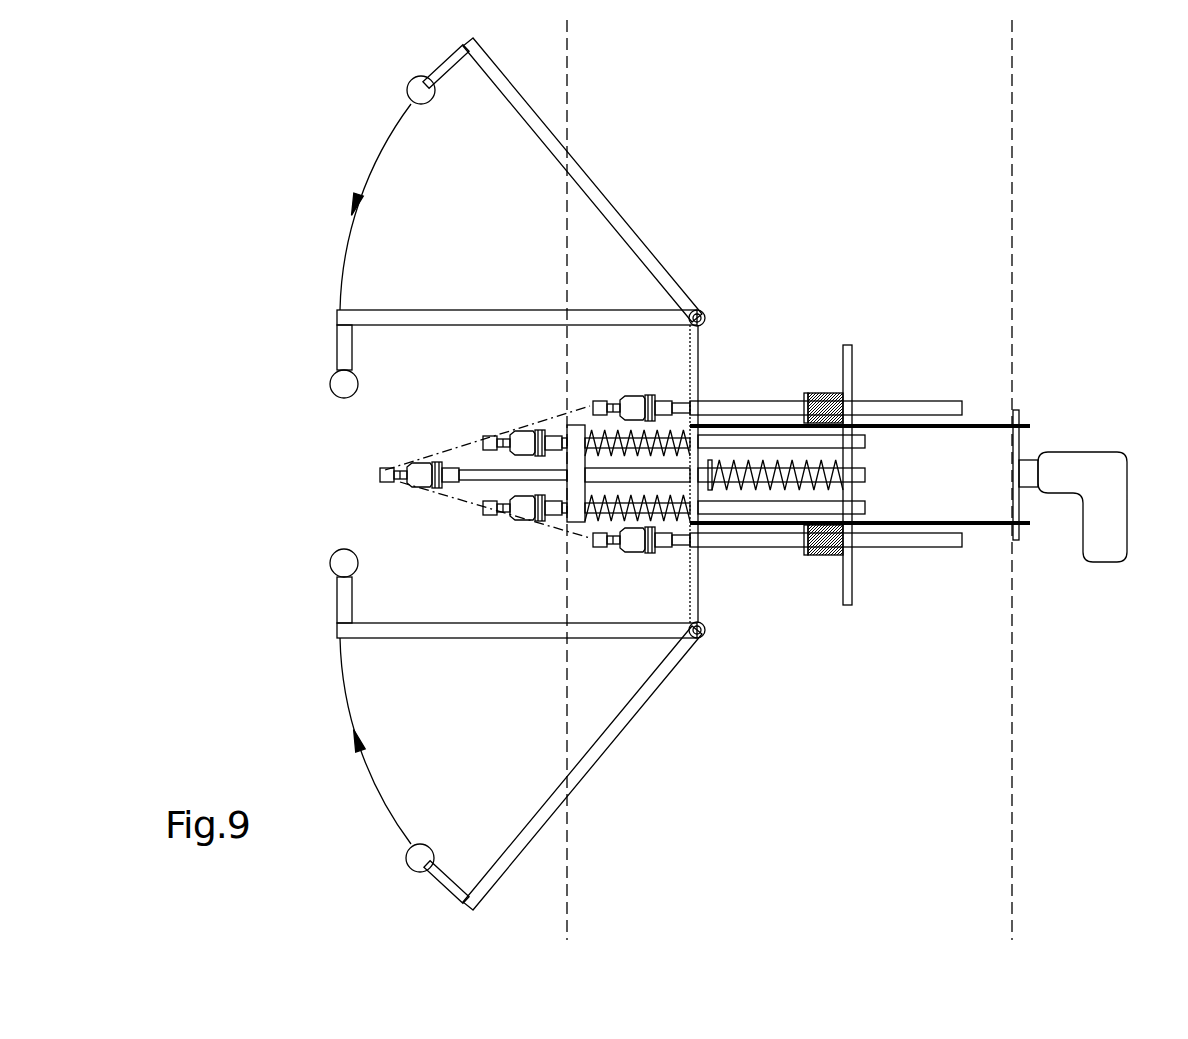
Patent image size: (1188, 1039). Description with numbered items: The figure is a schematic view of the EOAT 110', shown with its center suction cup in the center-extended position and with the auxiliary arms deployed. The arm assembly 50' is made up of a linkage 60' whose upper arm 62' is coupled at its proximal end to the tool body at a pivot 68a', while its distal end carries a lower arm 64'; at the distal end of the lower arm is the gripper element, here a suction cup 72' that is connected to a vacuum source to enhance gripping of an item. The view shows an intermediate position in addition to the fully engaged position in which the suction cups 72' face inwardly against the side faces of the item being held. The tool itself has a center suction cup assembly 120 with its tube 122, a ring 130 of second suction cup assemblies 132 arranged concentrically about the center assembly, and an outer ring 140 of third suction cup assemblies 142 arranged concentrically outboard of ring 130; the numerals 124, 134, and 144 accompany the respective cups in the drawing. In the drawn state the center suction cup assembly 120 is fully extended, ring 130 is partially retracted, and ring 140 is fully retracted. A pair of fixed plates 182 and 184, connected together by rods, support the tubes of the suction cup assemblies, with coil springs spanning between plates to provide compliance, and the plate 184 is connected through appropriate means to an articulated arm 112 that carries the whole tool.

The auxiliary arm assembly 50' is at (573, 482).
The linkage 60' is at (573, 482).
The upper arm 62' is at (605, 474).
The lower arm 64' is at (411, 482).
The suction cup 72' is at (380, 474).
The pivot 68a' is at (755, 458).
The EOAT 110' is at (666, 354).
The fixed plate 182 is at (700, 366).
The fixed plate 184 is at (846, 345).
The articulated arm 112 is at (1105, 562).
The center suction cup assembly 120 is at (358, 497).
The center suction cup tube 122 is at (358, 497).
The center nozzle tip 124 is at (378, 473).
The ring of second suction cup assemblies 130 is at (357, 475).
The second suction cup assembly 132 is at (357, 475).
The intermediate nozzle tip 134 is at (480, 442).
The ring of third suction cup assemblies 140 is at (425, 474).
The third suction cup assembly 142 is at (425, 474).
The outer nozzle tip 144 is at (583, 407).